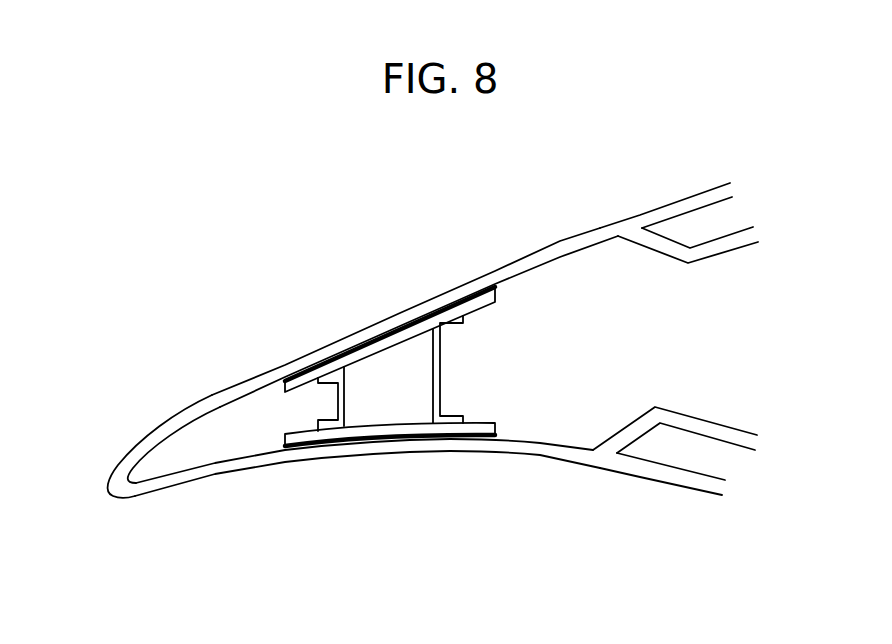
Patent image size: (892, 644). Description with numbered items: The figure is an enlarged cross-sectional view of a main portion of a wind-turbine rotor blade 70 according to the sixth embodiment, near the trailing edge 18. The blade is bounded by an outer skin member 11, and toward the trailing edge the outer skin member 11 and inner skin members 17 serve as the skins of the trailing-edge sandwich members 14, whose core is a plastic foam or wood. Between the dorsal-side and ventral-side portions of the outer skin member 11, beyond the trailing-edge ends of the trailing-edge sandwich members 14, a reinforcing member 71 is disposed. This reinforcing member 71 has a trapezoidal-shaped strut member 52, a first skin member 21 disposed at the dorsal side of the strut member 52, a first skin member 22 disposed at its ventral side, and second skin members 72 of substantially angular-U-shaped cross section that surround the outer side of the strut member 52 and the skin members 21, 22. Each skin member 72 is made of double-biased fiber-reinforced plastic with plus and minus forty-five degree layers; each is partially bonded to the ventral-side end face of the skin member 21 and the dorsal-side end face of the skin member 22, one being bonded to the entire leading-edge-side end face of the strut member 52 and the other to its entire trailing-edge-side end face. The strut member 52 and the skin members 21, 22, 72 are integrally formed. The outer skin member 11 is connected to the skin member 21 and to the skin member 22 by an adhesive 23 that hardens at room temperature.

The outer skin member 11 is at (549, 244).
The trailing-edge sandwich member 14 is at (703, 220).
The inner skin member 17 is at (729, 248).
The trailing edge 18 is at (110, 488).
The skin member 21 is at (488, 305).
The skin member 22 is at (478, 427).
The adhesive 23 is at (345, 340).
The trapezoidal-shaped strut member 52 is at (418, 379).
The wind-turbine rotor blade 70 is at (251, 228).
The reinforcing member 71 is at (551, 281).
The skin member 72 is at (435, 353).